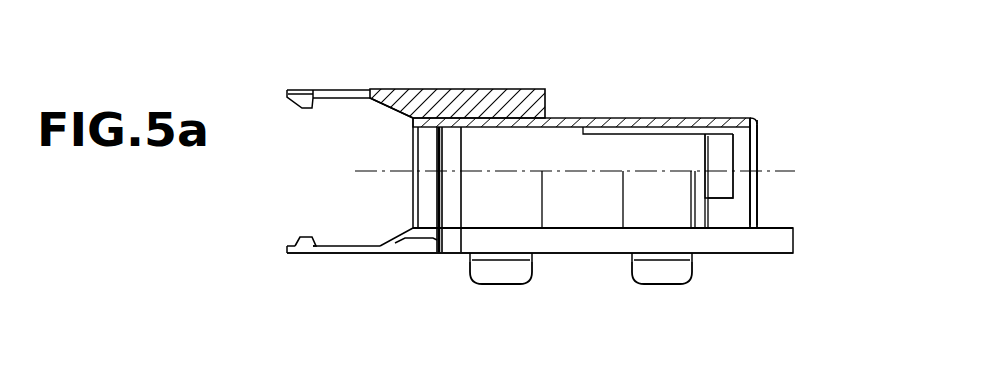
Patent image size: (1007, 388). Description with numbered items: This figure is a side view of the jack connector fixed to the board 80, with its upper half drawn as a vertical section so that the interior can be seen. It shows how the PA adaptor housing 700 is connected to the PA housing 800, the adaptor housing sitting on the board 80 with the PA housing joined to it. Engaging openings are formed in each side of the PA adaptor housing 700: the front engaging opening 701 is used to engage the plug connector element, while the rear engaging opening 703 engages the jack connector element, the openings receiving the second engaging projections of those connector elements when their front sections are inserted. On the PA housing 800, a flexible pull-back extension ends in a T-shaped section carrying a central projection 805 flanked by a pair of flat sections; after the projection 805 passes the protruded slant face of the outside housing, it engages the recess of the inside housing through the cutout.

The PA housing 800 is at (447, 88).
The projection 805 is at (300, 239).
The front engaging opening 701 is at (440, 148).
The rear engaging opening 703 is at (715, 150).
The PA adaptor housing 700 is at (770, 200).
The board 80 is at (768, 254).